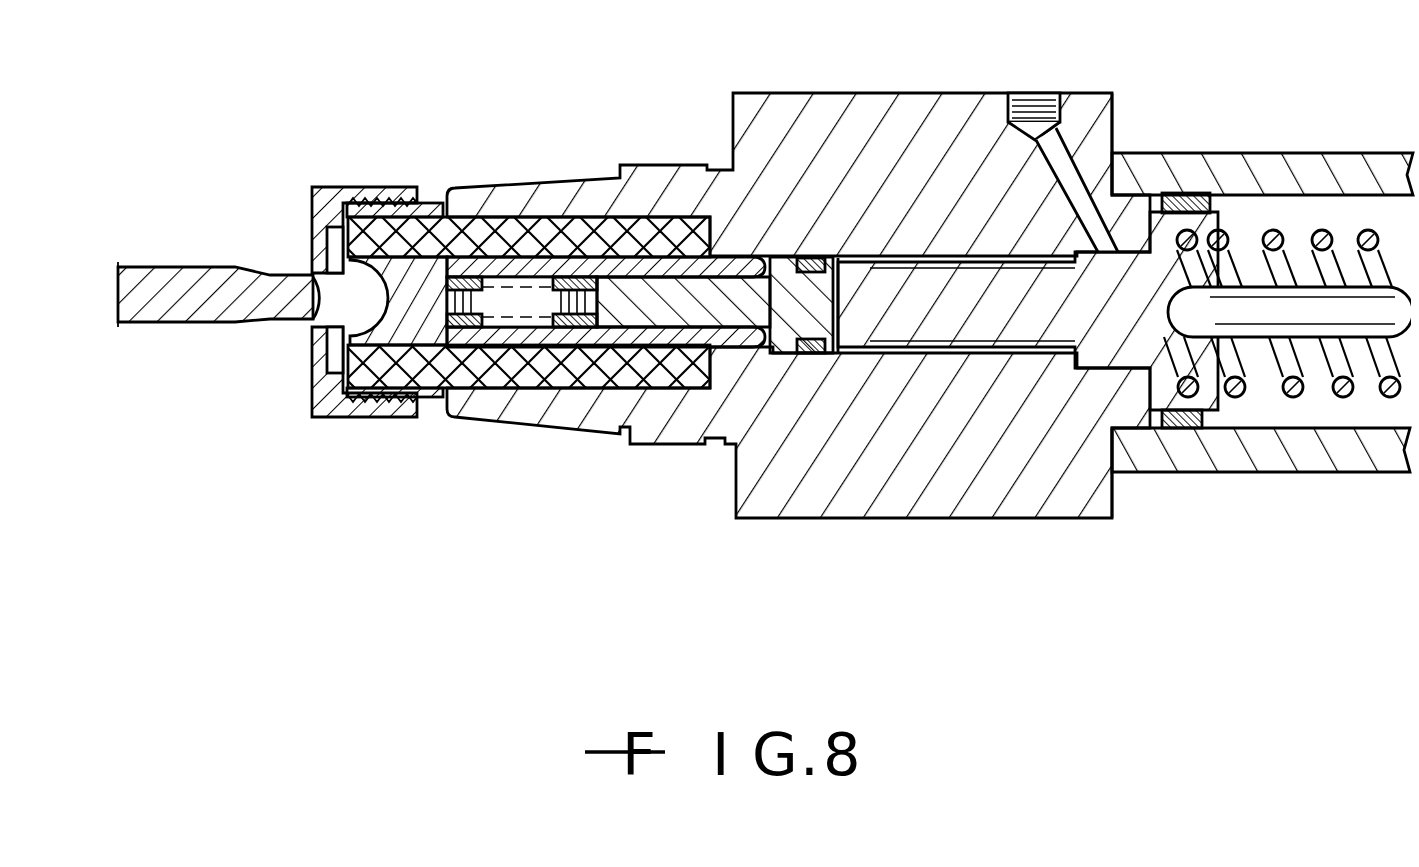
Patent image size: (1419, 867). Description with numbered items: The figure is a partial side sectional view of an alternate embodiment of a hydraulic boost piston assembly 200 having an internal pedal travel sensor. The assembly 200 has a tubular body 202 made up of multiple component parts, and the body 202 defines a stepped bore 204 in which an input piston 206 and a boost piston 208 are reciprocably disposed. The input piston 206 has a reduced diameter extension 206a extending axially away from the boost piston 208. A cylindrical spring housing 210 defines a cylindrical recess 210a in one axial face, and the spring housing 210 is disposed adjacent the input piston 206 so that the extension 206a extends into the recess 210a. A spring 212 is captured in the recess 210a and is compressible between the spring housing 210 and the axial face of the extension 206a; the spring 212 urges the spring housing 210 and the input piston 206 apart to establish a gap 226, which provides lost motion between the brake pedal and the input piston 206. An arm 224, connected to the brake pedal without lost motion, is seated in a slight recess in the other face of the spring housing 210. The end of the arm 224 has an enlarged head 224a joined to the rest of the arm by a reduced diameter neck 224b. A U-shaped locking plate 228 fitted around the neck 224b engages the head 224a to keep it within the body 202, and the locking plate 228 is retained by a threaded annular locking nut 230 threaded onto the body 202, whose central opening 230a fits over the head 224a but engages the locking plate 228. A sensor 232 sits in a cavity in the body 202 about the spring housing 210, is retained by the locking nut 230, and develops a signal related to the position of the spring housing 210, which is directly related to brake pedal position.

The hydraulic boost piston assembly 200 is at (1187, 515).
The tubular body 202 is at (662, 165).
The stepped bore 204 is at (970, 340).
The input piston 206 is at (795, 297).
The reduced diameter extension 206a is at (613, 297).
The boost piston 208 is at (927, 282).
The spring housing 210 is at (407, 323).
The cylindrical recess 210a is at (500, 312).
The spring 212 is at (573, 323).
The arm 224 is at (155, 267).
The enlarged head 224a is at (378, 295).
The reduced diameter neck 224b is at (267, 272).
The gap 226 is at (772, 355).
The U-shaped locking plate 228 is at (313, 350).
The threaded annular locking nut 230 is at (315, 185).
The central opening 230a is at (313, 270).
The sensor 232 is at (452, 232).